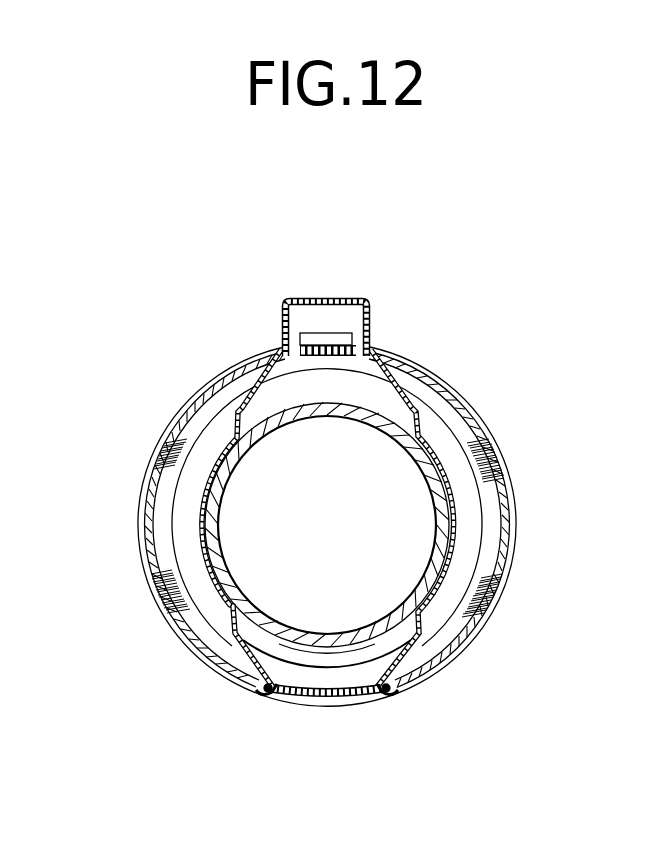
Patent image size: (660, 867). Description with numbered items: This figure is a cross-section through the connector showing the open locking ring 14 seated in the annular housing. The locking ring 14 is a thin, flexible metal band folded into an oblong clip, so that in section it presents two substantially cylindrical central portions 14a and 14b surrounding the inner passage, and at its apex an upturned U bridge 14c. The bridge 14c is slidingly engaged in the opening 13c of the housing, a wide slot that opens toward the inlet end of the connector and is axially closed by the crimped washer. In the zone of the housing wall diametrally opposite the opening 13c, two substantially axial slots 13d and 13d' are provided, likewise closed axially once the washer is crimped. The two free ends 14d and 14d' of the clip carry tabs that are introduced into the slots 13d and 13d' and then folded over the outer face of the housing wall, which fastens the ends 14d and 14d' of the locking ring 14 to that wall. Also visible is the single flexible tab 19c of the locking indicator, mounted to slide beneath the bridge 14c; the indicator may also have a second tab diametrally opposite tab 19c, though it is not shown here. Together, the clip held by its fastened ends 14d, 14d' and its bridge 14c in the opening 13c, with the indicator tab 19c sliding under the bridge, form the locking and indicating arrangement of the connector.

The open locking ring 14 is at (410, 387).
The central portion 14a is at (440, 470).
The central portion 14b is at (207, 470).
The upturned U bridge 14c is at (345, 283).
The free end 14d is at (422, 719).
The free end 14d' is at (242, 719).
The opening 13c is at (270, 345).
The axial slot 13d is at (378, 739).
The axial slot 13d' is at (288, 739).
The flexible tab 19c is at (345, 333).